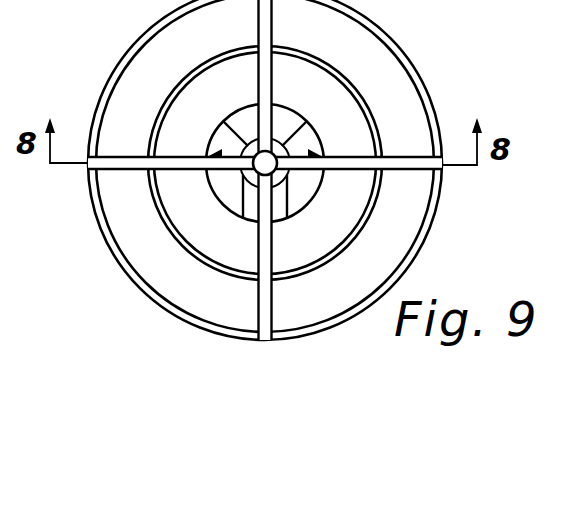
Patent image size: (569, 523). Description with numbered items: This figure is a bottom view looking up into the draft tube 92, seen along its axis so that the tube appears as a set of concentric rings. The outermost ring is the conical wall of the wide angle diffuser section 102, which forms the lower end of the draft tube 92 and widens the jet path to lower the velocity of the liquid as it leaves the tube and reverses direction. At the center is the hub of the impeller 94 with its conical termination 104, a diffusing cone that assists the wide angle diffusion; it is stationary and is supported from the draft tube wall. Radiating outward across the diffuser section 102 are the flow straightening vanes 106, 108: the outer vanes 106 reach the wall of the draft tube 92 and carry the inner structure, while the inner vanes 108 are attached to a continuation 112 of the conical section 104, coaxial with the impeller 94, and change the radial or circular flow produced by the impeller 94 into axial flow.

The draft tube 92 is at (374, 27).
The impeller 94 is at (240, 117).
The wide angle diffuser section 102 is at (408, 230).
The conical termination 104 is at (290, 143).
The flow straightening vanes 106 is at (272, 24).
The flow straightening vanes 108 is at (258, 60).
The continuation of the conical section 112 is at (262, 167).